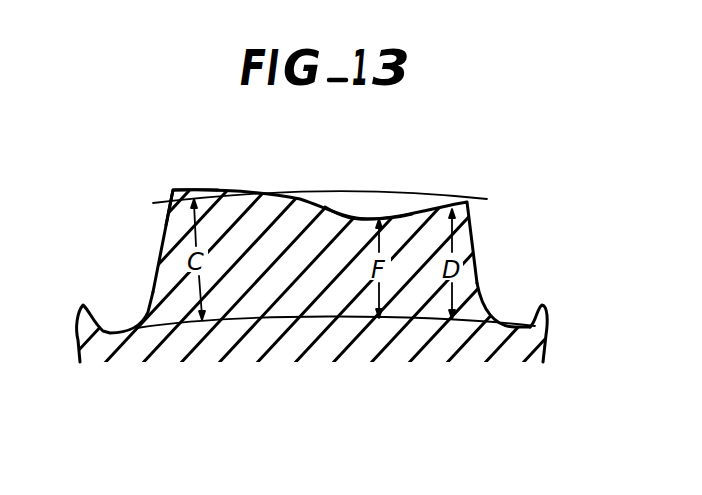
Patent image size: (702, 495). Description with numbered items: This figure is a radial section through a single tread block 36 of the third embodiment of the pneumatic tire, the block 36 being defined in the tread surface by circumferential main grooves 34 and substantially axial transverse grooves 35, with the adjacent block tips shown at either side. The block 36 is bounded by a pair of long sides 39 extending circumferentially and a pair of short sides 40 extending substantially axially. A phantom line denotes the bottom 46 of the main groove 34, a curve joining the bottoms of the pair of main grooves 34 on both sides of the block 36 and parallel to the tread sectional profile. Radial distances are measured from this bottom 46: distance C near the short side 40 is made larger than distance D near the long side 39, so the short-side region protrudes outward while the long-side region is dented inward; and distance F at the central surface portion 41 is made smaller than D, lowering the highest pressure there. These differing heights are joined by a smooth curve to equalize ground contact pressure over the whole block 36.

The main groove 34 is at (534, 308).
The transverse groove 35 is at (97, 326).
The block 36 is at (418, 220).
The long side 39 is at (486, 199).
The short side 40 is at (173, 190).
The central surface portion 41 is at (380, 217).
The bottom of the main groove 46 is at (503, 324).